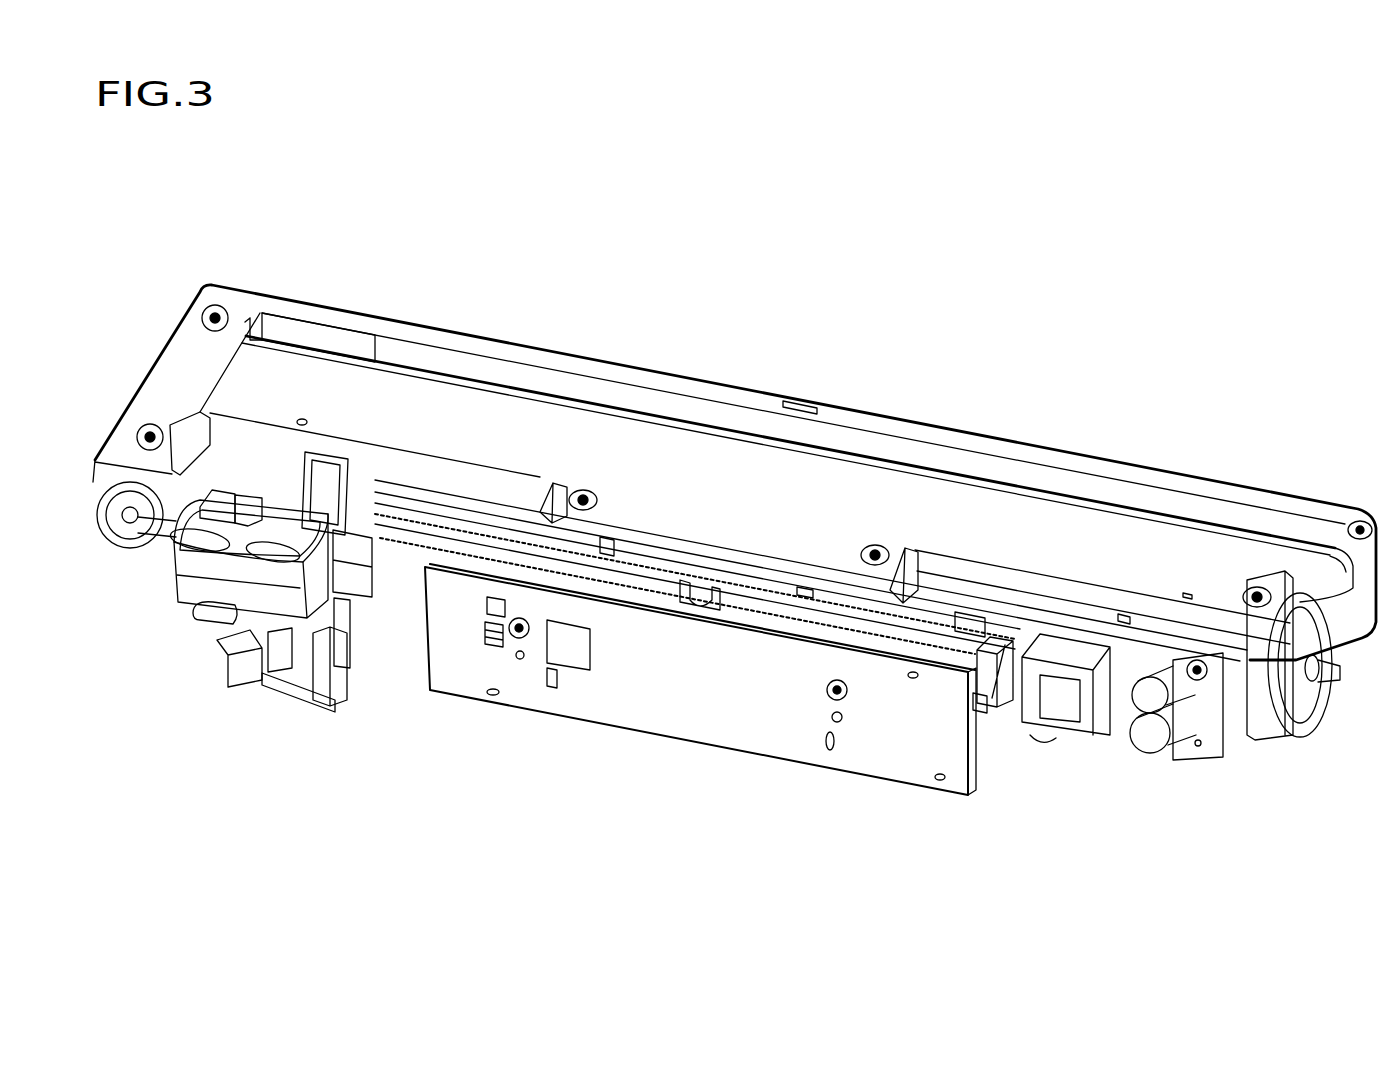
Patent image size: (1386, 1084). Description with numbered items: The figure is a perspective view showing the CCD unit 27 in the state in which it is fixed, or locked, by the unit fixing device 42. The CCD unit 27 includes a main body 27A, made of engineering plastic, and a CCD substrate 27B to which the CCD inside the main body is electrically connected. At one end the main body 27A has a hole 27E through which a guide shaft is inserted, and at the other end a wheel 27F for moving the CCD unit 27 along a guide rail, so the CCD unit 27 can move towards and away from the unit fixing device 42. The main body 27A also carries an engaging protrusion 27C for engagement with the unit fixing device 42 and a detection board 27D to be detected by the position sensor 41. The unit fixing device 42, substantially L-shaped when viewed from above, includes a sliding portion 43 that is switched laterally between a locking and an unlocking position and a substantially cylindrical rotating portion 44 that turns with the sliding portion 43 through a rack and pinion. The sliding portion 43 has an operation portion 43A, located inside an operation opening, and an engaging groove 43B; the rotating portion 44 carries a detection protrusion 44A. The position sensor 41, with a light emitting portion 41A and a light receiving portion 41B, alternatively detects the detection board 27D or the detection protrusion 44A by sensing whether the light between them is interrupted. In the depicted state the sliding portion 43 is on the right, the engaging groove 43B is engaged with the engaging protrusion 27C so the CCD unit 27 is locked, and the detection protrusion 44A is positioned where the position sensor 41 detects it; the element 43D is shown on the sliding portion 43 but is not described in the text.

The CCD unit 27 is at (1244, 444).
The main body 27A is at (820, 494).
The CCD substrate 27B is at (735, 703).
The engaging protrusion 27C is at (362, 567).
The detection board 27D is at (340, 603).
The hole 27E is at (96, 520).
The wheel 27F is at (1307, 708).
The position sensor 41 is at (285, 704).
The light emitting portion 41A is at (267, 677).
The light receiving portion 41B is at (340, 672).
The unit fixing device 42 is at (246, 513).
The sliding portion 43 is at (197, 588).
The operation portion 43A is at (253, 530).
The engaging groove 43B is at (347, 533).
The housing projection 43D is at (247, 497).
The rotating portion 44 is at (213, 613).
The detection protrusion 44A is at (287, 670).